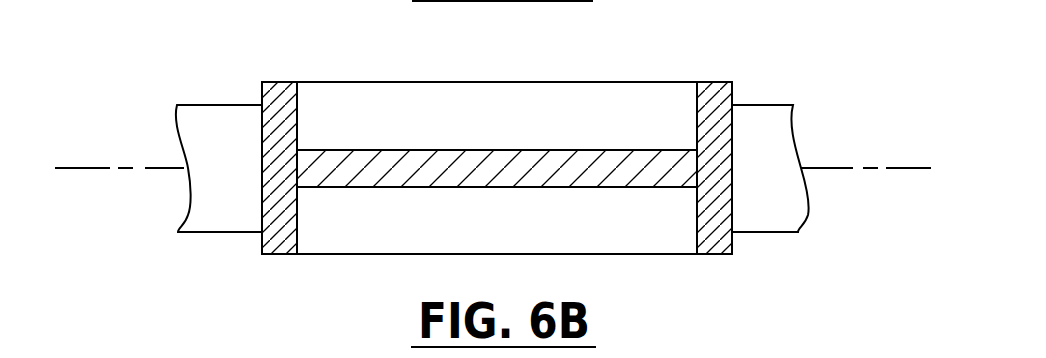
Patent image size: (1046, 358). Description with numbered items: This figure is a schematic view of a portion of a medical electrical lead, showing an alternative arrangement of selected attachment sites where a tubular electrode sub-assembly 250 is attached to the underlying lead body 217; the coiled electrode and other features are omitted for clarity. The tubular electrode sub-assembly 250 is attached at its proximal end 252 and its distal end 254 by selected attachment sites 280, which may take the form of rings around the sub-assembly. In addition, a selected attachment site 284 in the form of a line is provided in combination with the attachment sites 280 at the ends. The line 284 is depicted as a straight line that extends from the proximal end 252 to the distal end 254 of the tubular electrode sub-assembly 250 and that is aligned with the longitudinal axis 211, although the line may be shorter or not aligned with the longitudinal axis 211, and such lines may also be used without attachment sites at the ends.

The tubular electrode sub-assembly 250 is at (662, 52).
The selected attachment sites 280 is at (277, 90).
The selected attachment site 284 is at (390, 150).
The proximal end 252 is at (262, 191).
The distal end 254 is at (733, 240).
The lead body 217 is at (777, 197).
The longitudinal axis 211 is at (82, 168).